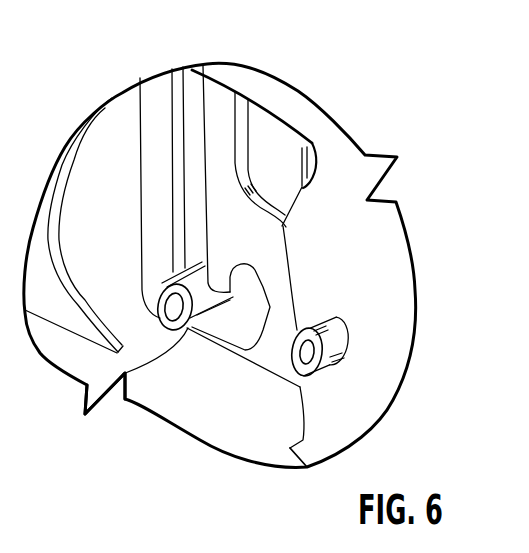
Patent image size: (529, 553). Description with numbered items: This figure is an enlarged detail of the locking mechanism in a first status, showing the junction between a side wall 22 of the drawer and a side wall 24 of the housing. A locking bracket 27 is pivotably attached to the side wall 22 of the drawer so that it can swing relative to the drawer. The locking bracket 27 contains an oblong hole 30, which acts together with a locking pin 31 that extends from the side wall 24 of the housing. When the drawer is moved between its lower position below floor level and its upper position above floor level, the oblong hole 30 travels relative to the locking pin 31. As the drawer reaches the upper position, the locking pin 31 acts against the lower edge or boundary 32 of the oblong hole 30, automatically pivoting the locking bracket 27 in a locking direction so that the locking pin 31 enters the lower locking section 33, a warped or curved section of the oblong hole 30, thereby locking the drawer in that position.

The side wall 22 is at (375, 253).
The side wall 24 is at (168, 398).
The locking bracket 27 is at (141, 196).
The oblong hole 30 is at (194, 106).
The locking pin 31 is at (122, 398).
The lower edge or boundary 32 is at (220, 346).
The lower locking section 33 is at (251, 292).